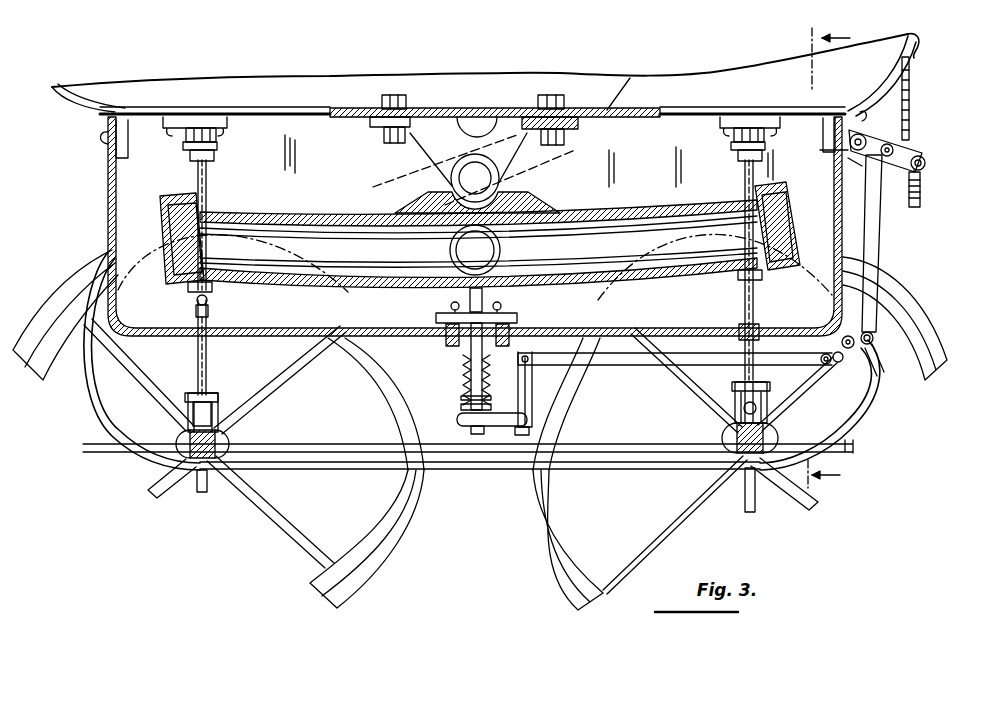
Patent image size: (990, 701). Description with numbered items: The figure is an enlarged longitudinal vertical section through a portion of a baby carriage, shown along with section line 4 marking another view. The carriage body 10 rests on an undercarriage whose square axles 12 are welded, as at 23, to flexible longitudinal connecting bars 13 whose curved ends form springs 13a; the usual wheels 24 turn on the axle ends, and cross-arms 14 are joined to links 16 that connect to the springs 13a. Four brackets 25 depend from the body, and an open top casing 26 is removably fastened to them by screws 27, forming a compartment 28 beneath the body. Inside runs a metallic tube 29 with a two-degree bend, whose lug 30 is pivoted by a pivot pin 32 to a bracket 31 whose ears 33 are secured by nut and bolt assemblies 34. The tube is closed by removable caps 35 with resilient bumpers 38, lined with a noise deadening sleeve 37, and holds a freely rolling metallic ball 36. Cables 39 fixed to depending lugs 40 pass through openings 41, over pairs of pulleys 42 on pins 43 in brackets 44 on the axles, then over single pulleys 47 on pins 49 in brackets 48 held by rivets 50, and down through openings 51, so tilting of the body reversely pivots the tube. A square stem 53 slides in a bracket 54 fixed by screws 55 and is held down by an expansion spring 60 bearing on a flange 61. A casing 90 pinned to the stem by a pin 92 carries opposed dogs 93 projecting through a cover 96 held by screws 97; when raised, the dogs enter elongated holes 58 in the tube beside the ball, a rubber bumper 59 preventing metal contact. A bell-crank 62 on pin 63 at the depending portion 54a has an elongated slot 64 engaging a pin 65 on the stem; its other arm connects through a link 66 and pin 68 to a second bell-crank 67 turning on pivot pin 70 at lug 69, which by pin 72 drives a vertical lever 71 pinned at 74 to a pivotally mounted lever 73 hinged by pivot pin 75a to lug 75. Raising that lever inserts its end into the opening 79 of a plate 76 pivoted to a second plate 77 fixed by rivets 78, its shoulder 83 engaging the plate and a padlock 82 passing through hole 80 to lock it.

The section line 4— 4 is at (835, 256).
The carriage body 10 is at (262, 84).
The square axles 12 is at (185, 482).
The longitudinal connecting bars 13 is at (455, 469).
The springs 13a is at (85, 418).
The cross-arms 14 is at (405, 160).
The links 16 is at (186, 293).
The welds 23 is at (188, 446).
The wheels 24 is at (905, 330).
The brackets 25 is at (122, 122).
The open top casing 26 is at (108, 218).
The screws 27 is at (100, 137).
The compartment 28 is at (295, 132).
The metallic tube 29 is at (478, 204).
The lug 30 is at (540, 205).
The bracket 31 is at (440, 110).
The pivot pin 32 is at (500, 183).
The ears 33 is at (372, 124).
The nut and bolt assemblies 34 is at (397, 95).
The removable caps 35 is at (477, 225).
The metallic ball 36 is at (502, 263).
The sleeve 37 is at (615, 212).
The resilient bumpers 38 is at (165, 232).
The cables 39 is at (208, 192).
The depending lug 40 is at (196, 303).
The openings 41 is at (198, 345).
The pulleys 42 is at (212, 392).
The pins 43 is at (218, 396).
The brackets 44 is at (193, 408).
The pulleys 47 is at (214, 158).
The brackets 48 is at (183, 147).
The pins 49 is at (216, 138).
The rivets 50 is at (172, 118).
The openings 51 is at (446, 338).
The stem 53 is at (469, 377).
The bracket 54 is at (400, 380).
The depending portion 54a is at (560, 393).
The screws 55 is at (463, 360).
The elongated holes 58 is at (475, 250).
The rubber bumper 59 is at (450, 259).
The expansion spring 60 is at (461, 397).
The flange 61 is at (461, 409).
The bell-crank 62 is at (535, 414).
The pin 63 is at (521, 436).
The elongated slot 64 is at (460, 427).
The pin 65 is at (478, 436).
The link 66 is at (643, 366).
The bell-crank 67 is at (530, 350).
The pin 68 is at (821, 362).
The lug 69 is at (842, 338).
The pivot pin 70 is at (841, 363).
The lever 71 is at (883, 249).
The pin 72 is at (878, 360).
The pivotally mounted lever 73 is at (870, 172).
The pin 74 is at (866, 138).
The lug 75 is at (822, 150).
The pivot pin 75a is at (850, 162).
The plate 76 is at (910, 92).
The second plate 77 is at (921, 39).
The rivets 78 is at (920, 58).
The opening 79 is at (917, 126).
The hole 80 is at (926, 160).
The padlock 82 is at (921, 190).
The shoulder 83 is at (895, 150).
The casing 90 is at (510, 326).
The pin 92 is at (485, 312).
The dogs 93 is at (452, 306).
The cover 96 is at (478, 300).
The screws 97 is at (555, 311).